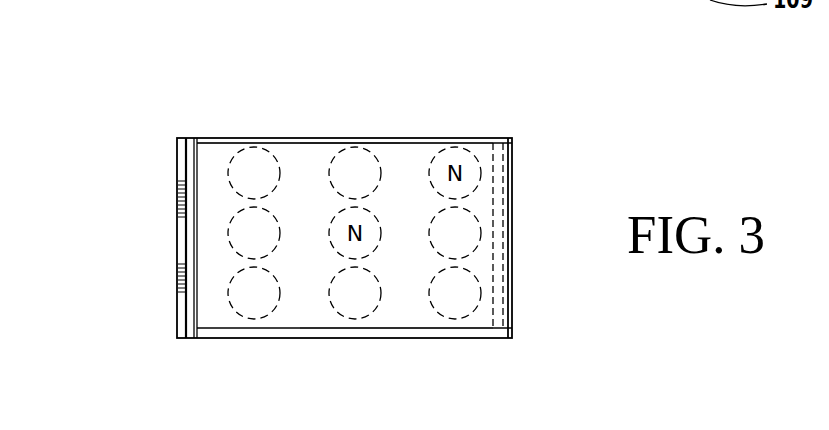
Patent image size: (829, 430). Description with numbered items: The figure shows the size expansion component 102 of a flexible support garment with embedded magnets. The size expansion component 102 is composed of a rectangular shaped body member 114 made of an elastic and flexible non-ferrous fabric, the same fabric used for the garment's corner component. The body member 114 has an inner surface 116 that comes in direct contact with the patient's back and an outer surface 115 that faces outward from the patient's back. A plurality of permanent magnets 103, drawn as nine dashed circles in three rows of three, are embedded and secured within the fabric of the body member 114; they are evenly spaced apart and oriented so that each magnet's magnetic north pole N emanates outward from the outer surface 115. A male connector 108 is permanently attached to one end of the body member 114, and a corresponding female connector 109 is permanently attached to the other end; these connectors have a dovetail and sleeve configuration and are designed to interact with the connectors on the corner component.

The size expansion component 102 is at (139, 172).
The permanent magnets 103 is at (243, 310).
The male connector 108 is at (187, 140).
The female connector 109 is at (512, 152).
The body member 114 is at (300, 152).
The outer surface 115 is at (388, 153).
The inner surface 116 is at (407, 303).